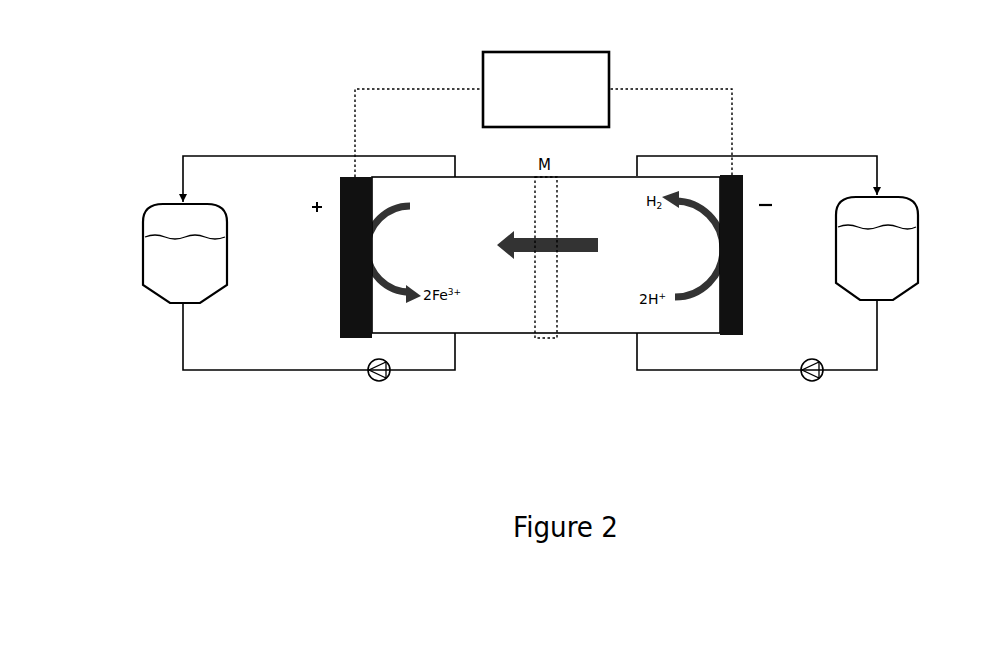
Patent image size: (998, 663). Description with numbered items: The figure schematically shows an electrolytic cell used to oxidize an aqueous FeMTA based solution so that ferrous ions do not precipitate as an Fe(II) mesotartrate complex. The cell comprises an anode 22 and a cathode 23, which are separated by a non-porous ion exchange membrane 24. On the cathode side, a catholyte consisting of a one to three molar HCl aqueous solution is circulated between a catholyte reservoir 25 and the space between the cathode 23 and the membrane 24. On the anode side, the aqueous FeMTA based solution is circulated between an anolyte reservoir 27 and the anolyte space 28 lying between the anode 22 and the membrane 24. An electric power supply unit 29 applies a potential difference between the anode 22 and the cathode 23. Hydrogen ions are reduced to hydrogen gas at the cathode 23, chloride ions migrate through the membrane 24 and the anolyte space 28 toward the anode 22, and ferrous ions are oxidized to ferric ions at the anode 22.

The anode 22 is at (355, 340).
The cathode 23 is at (727, 335).
The non-porous ion exchange membrane 24 is at (538, 333).
The catholyte reservoir 25 is at (917, 247).
The anolyte reservoir 27 is at (158, 214).
The anolyte space 28 is at (471, 340).
The electric power supply unit 29 is at (563, 72).